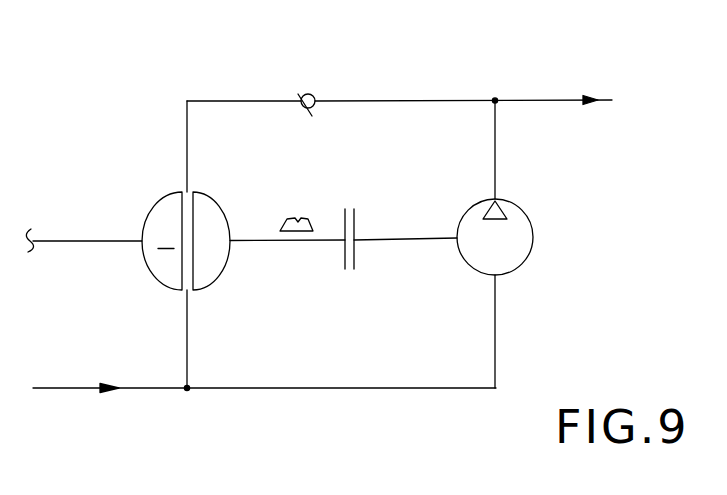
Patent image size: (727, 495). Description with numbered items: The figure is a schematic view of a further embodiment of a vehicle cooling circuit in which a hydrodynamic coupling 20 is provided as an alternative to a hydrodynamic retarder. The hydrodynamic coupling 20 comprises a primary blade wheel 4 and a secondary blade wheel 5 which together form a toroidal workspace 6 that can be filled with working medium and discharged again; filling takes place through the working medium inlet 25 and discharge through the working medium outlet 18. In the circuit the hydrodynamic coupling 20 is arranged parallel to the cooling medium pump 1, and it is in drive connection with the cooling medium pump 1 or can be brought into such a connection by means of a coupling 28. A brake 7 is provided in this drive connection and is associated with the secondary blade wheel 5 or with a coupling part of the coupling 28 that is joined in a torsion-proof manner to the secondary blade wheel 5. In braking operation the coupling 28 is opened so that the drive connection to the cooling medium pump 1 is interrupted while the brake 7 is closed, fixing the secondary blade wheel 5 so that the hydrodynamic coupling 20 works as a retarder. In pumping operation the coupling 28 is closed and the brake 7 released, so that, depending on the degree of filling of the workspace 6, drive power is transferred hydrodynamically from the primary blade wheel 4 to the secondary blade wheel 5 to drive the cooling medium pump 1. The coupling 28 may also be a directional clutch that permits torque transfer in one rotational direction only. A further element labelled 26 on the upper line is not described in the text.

The cooling medium pump 1 is at (518, 222).
The primary blade wheel 4 is at (160, 263).
The secondary blade wheel 5 is at (215, 263).
The workspace 6 is at (166, 237).
The brake 7 is at (298, 217).
The working medium outlet 18 is at (187, 155).
The hydrodynamic coupling 20 is at (163, 223).
The working medium inlet 25 is at (187, 334).
The throttle valve 26 is at (317, 80).
The coupling 28 is at (359, 191).